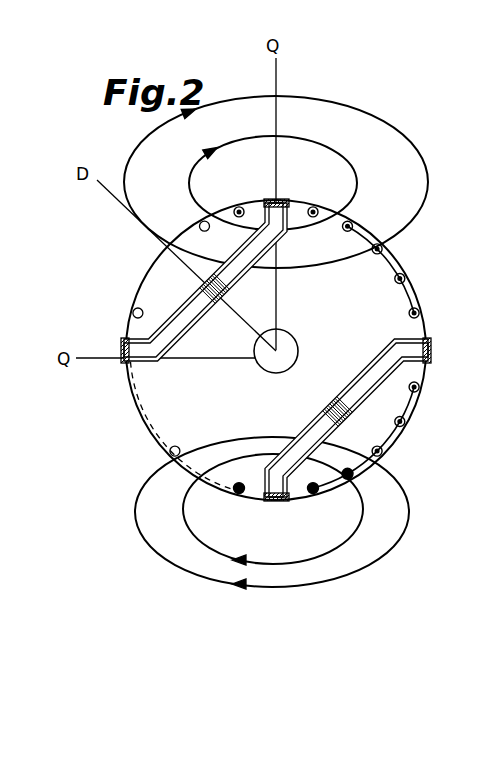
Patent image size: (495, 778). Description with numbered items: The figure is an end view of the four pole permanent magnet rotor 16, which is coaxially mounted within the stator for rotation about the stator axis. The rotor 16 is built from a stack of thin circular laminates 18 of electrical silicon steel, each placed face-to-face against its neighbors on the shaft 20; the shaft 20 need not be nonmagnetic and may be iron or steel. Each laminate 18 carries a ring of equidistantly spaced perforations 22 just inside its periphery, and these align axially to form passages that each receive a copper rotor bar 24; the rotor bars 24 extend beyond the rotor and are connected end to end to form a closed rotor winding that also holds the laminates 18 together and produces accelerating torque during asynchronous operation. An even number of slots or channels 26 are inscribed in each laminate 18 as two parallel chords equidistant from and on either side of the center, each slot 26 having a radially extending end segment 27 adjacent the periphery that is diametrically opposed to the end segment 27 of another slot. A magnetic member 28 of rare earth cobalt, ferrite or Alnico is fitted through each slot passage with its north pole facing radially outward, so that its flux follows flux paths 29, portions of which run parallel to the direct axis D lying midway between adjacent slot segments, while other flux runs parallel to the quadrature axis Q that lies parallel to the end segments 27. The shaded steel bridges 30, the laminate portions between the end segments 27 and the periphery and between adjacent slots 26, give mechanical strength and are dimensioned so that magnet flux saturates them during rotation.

The permanent magnet rotor 16 is at (126, 473).
The circular laminate 18 is at (170, 460).
The shaft 20 is at (298, 344).
The perforations 22 is at (349, 232).
The rotor bars 24 is at (405, 284).
The slots or channels 26 is at (248, 283).
The radially extending end segment 27 is at (293, 230).
The magnetic member 28 is at (202, 288).
The flux paths 29 is at (352, 112).
The steel bridges 30 is at (282, 199).